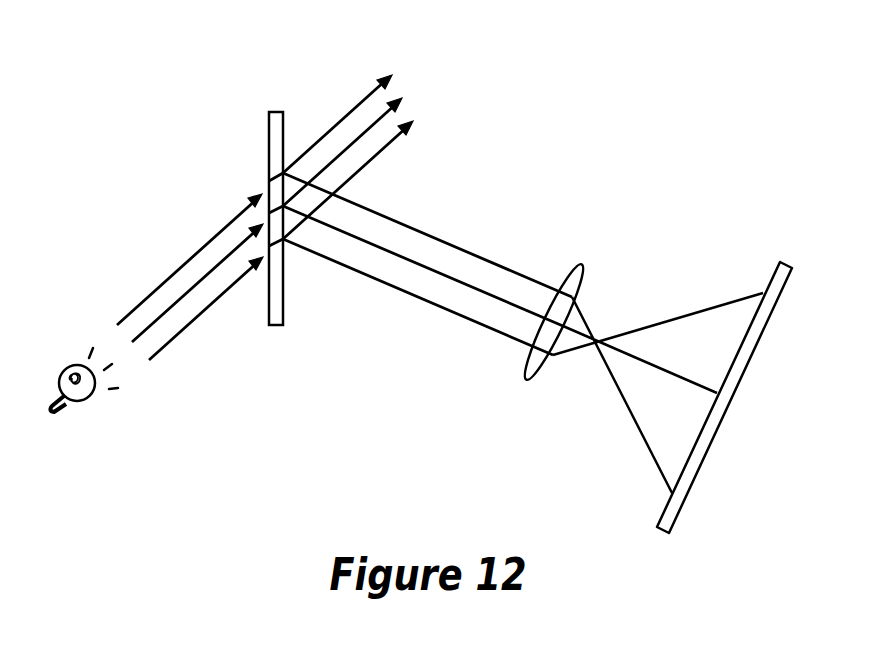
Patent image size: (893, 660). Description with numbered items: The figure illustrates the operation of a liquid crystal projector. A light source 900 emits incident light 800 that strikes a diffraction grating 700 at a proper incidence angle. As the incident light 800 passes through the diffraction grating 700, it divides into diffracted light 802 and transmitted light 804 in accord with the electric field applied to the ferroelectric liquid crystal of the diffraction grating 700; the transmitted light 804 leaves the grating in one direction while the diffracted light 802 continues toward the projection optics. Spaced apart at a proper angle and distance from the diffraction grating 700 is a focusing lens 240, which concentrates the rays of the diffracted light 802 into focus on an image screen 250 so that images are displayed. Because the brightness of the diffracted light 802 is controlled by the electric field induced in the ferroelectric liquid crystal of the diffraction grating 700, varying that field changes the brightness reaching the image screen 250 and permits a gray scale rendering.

The diffraction grating 700 is at (261, 113).
The incident light 800 is at (200, 318).
The diffracted light 802 is at (417, 302).
The transmitted light 804 is at (370, 93).
The focusing lens 240 is at (583, 264).
The image screen 250 is at (786, 260).
The light source 900 is at (93, 400).